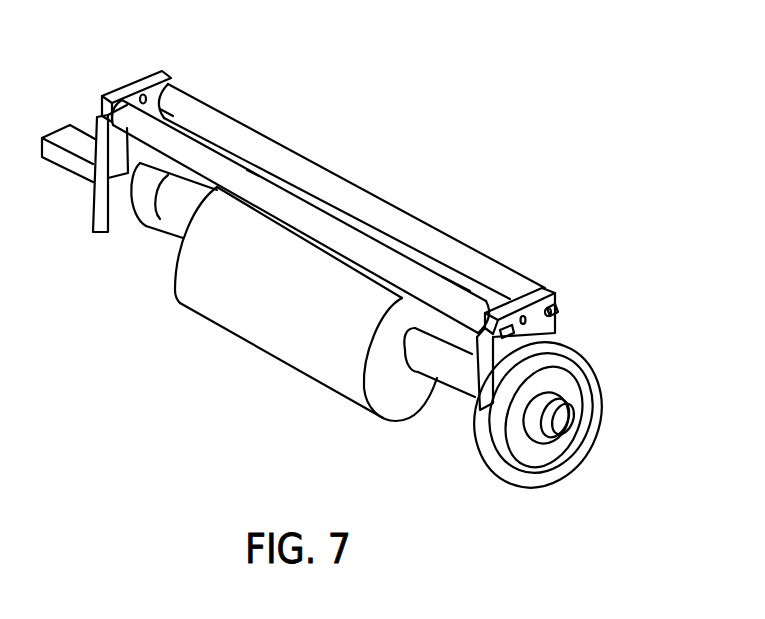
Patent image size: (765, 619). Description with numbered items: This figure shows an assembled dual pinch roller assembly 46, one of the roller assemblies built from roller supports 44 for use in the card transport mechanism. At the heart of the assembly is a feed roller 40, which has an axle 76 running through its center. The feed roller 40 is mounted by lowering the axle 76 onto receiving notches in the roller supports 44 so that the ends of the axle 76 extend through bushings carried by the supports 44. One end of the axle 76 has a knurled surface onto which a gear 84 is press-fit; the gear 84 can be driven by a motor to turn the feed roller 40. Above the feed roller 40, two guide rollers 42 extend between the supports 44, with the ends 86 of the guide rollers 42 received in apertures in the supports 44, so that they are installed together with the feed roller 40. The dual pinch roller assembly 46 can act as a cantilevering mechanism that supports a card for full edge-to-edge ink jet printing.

The feed roller 40 is at (262, 325).
The guide rollers 42 is at (228, 127).
The roller supports 44 is at (145, 72).
The dual pinch roller assembly 46 is at (459, 153).
The axle 76 is at (450, 373).
The gear 84 is at (593, 420).
The ends of guide rollers 86 is at (558, 308).